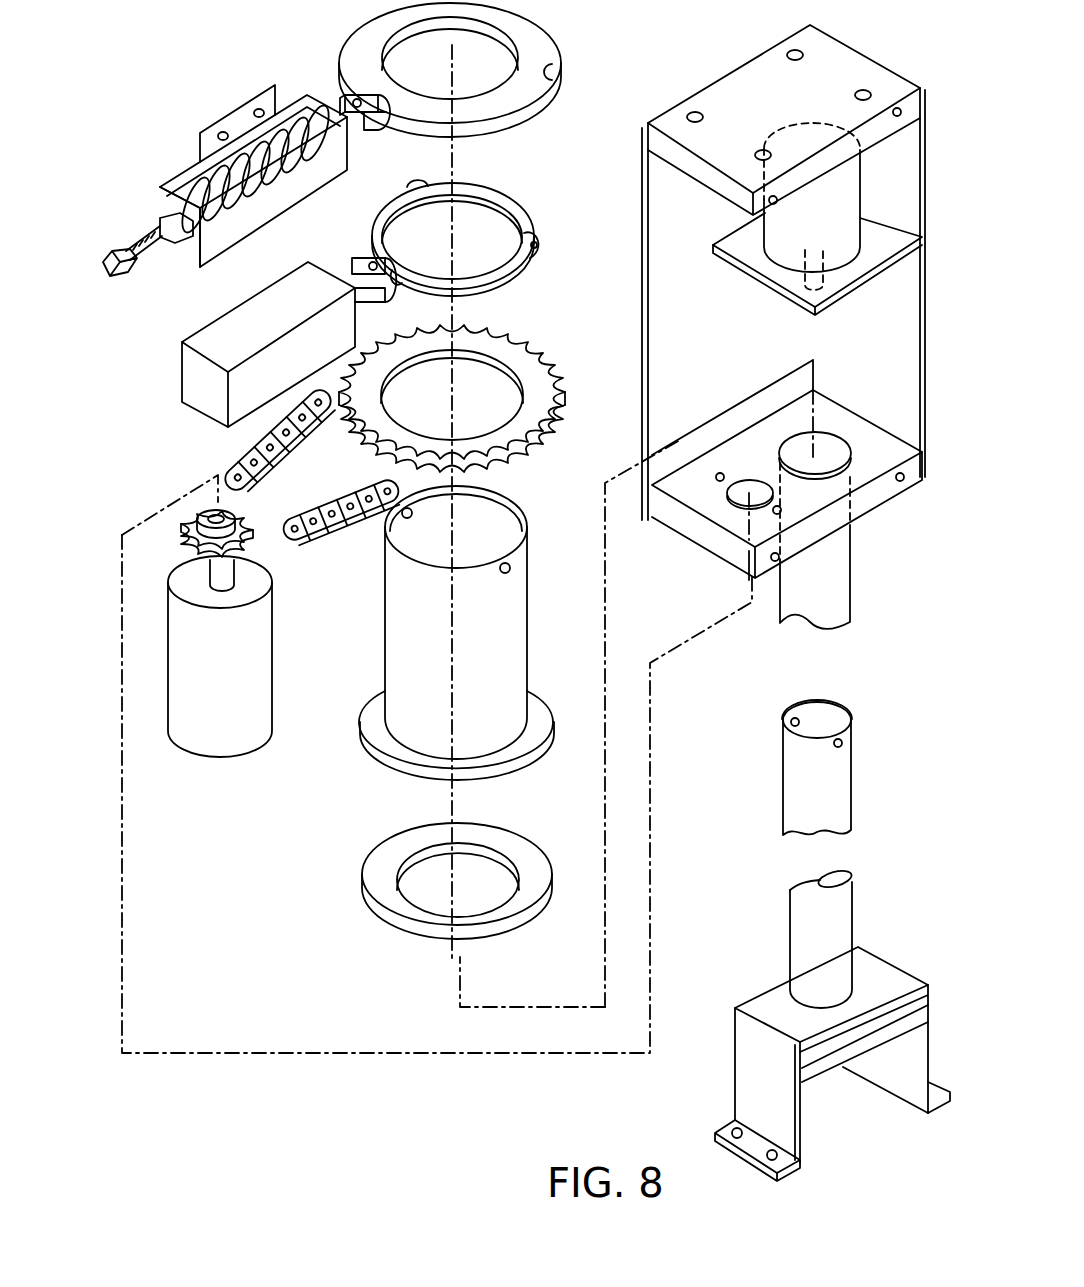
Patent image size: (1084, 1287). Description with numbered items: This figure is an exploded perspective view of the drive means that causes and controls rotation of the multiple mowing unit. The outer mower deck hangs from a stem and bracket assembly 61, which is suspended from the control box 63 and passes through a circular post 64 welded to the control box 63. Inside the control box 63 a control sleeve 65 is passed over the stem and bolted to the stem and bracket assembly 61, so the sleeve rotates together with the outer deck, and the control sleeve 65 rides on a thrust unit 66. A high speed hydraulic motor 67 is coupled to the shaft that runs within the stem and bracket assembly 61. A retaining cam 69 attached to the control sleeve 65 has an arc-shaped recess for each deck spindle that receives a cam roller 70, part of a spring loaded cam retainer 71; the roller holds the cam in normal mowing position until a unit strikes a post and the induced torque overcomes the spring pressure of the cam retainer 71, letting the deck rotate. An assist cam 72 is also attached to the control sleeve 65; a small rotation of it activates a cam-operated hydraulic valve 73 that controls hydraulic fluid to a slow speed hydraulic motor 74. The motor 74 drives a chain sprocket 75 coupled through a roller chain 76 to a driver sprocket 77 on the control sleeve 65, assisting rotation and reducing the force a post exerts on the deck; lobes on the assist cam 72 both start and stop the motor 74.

The stem and bracket assembly 61 is at (845, 971).
The control box 63 is at (730, 335).
The circular post 64 is at (838, 600).
The control sleeve 65 is at (482, 668).
The thrust unit 66 is at (405, 913).
The high speed hydraulic motor 67 is at (832, 231).
The retaining cam 69 is at (523, 93).
The cam roller 70 is at (370, 132).
The spring loaded cam retainer 71 is at (297, 185).
The assist cam 72 is at (530, 262).
The cam-operated hydraulic valve 73 is at (285, 335).
The slow speed hydraulic motor 74 is at (243, 686).
The chain sprocket 75 is at (240, 520).
The roller chain 76 is at (320, 542).
The driver sprocket 77 is at (492, 442).